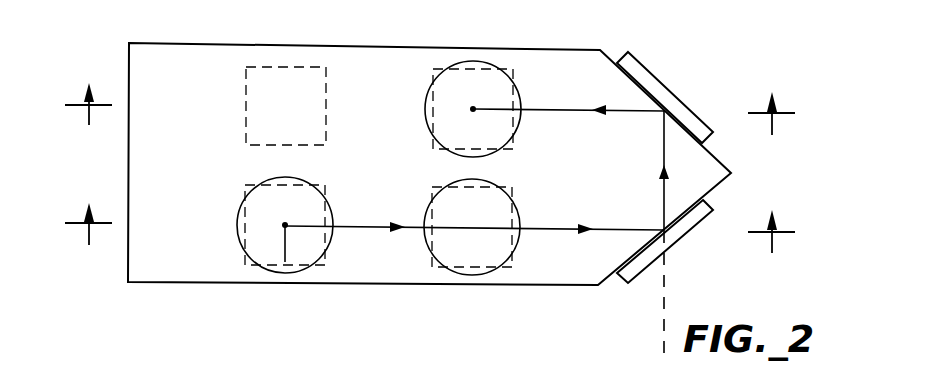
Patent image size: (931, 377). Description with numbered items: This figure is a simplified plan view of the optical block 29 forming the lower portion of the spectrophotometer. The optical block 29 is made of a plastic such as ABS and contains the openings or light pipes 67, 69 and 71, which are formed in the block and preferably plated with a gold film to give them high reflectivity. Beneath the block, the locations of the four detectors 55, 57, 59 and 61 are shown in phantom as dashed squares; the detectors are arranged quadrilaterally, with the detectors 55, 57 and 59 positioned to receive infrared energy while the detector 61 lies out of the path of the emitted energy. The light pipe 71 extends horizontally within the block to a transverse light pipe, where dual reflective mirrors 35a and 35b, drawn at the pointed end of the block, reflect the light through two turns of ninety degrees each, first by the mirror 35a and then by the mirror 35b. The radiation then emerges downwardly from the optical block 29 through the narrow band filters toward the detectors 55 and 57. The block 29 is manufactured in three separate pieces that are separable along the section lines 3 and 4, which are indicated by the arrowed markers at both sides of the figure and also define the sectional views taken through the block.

The optical block 29 is at (563, 42).
The reflective mirror 35a is at (681, 243).
The reflective mirror 35b is at (672, 89).
The detector 55 is at (302, 275).
The detector 57 is at (473, 275).
The detector 59 is at (458, 46).
The detector 61 is at (268, 67).
The light pipe 67 is at (247, 192).
The light pipe 69 is at (513, 208).
The light pipe 71 is at (433, 96).
The section line 3- 3 is at (429, 228).
The section line 4- 4 is at (429, 109).